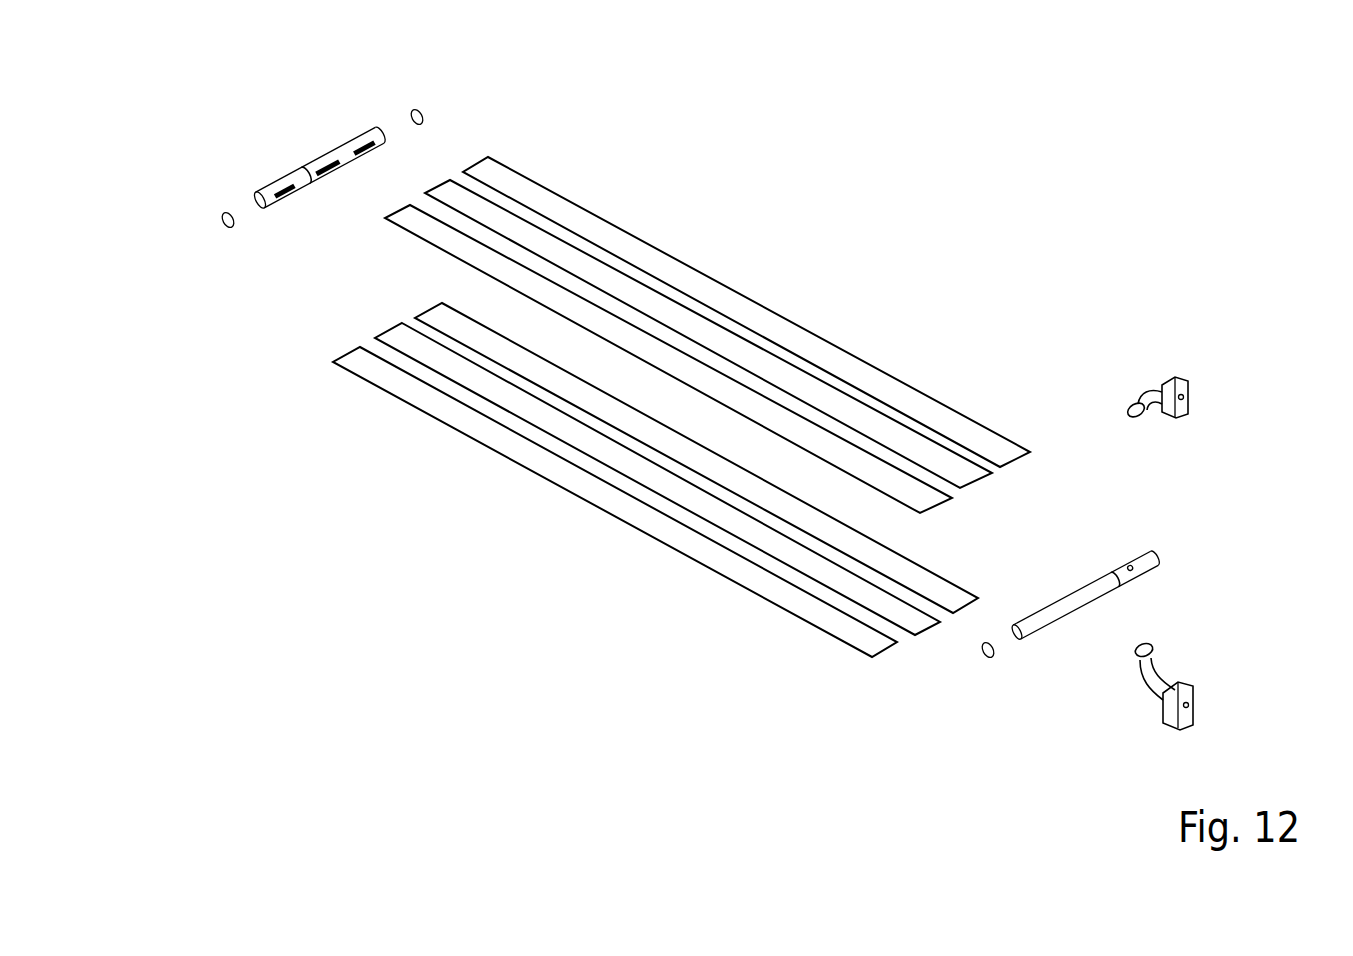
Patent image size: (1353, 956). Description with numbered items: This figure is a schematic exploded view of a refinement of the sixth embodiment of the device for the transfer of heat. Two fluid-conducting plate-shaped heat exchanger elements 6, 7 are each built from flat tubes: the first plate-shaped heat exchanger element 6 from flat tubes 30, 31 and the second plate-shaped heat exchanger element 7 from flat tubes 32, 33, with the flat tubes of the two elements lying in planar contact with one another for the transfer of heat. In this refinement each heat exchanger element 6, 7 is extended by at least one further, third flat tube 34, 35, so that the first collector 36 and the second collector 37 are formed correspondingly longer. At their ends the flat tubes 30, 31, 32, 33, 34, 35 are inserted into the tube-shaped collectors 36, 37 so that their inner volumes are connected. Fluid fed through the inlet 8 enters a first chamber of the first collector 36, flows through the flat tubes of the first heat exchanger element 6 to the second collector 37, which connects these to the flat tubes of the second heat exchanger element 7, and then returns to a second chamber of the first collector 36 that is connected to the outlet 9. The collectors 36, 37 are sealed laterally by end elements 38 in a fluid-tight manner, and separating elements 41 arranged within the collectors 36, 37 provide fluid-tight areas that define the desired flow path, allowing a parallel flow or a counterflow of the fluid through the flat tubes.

The first plate-shaped heat exchanger element 6 is at (707, 292).
The second plate-shaped heat exchanger element 7 is at (607, 480).
The inlet 8 is at (1190, 388).
The outlet 9 is at (1200, 702).
The flat tube 30 is at (663, 273).
The flat tube 31 is at (673, 312).
The flat tube 32 is at (438, 337).
The flat tube 33 is at (480, 373).
The third flat tube 34 is at (727, 390).
The third flat tube 35 is at (510, 443).
The first collector 36 is at (1160, 572).
The second collector 37 is at (355, 137).
The end element 38 is at (427, 113).
The separating element 41 is at (287, 168).